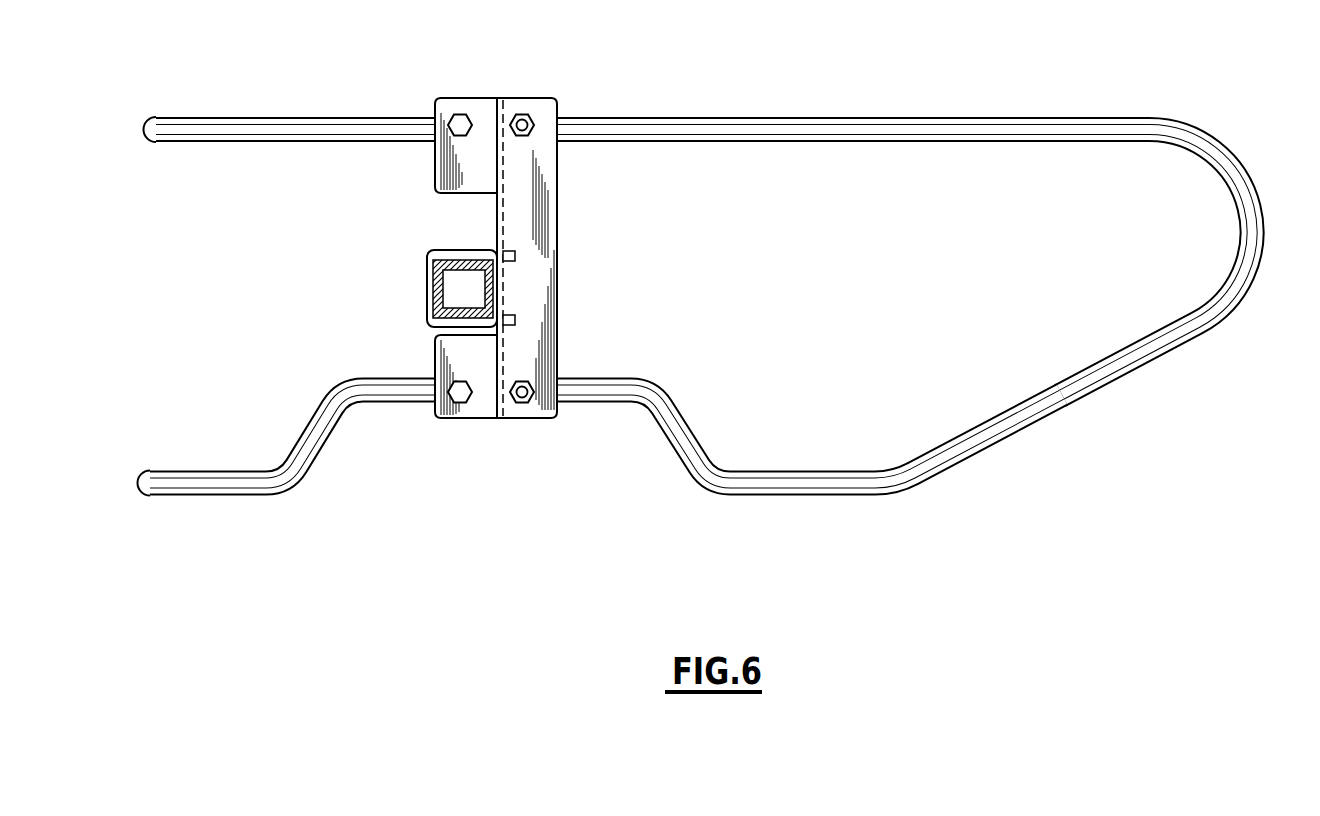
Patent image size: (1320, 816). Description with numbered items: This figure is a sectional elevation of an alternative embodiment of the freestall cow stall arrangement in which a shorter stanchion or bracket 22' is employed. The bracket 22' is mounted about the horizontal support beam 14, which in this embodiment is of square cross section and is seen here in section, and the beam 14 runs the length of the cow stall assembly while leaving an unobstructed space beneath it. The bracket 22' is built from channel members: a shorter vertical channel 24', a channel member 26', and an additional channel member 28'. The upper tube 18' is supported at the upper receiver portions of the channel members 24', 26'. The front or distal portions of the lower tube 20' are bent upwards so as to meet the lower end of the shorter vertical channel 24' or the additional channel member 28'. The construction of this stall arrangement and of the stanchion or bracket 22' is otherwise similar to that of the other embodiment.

The horizontal support beam 14 is at (448, 283).
The upper tube 18' is at (698, 220).
The lower tube 20' is at (600, 439).
The stanchion or bracket 22' is at (518, 288).
The vertical channel 24' is at (572, 258).
The channel member 26' is at (421, 150).
The additional channel member 28' is at (478, 407).